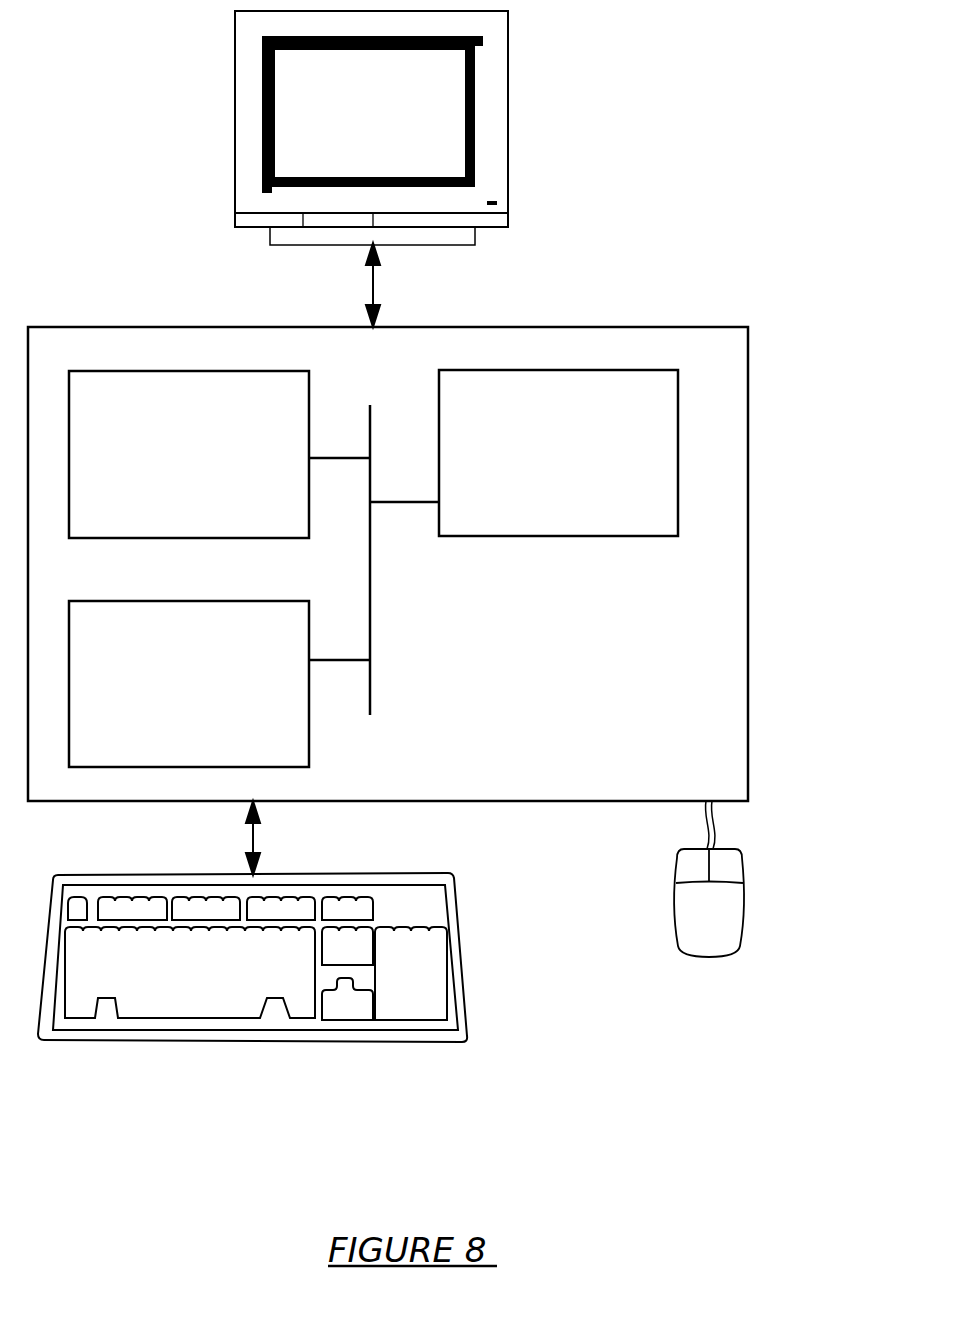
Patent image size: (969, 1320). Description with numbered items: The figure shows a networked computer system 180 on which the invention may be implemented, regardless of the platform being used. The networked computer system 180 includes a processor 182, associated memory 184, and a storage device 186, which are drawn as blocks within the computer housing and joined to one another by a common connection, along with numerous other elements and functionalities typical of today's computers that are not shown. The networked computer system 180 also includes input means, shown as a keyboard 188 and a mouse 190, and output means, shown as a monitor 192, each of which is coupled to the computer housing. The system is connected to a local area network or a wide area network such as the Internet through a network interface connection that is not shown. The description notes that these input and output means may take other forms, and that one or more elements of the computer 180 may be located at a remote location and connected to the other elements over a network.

The networked computer system 180 is at (770, 171).
The processor 182 is at (602, 464).
The memory 184 is at (214, 466).
The storage device 186 is at (211, 697).
The keyboard 188 is at (208, 998).
The mouse 190 is at (734, 927).
The monitor 192 is at (397, 132).